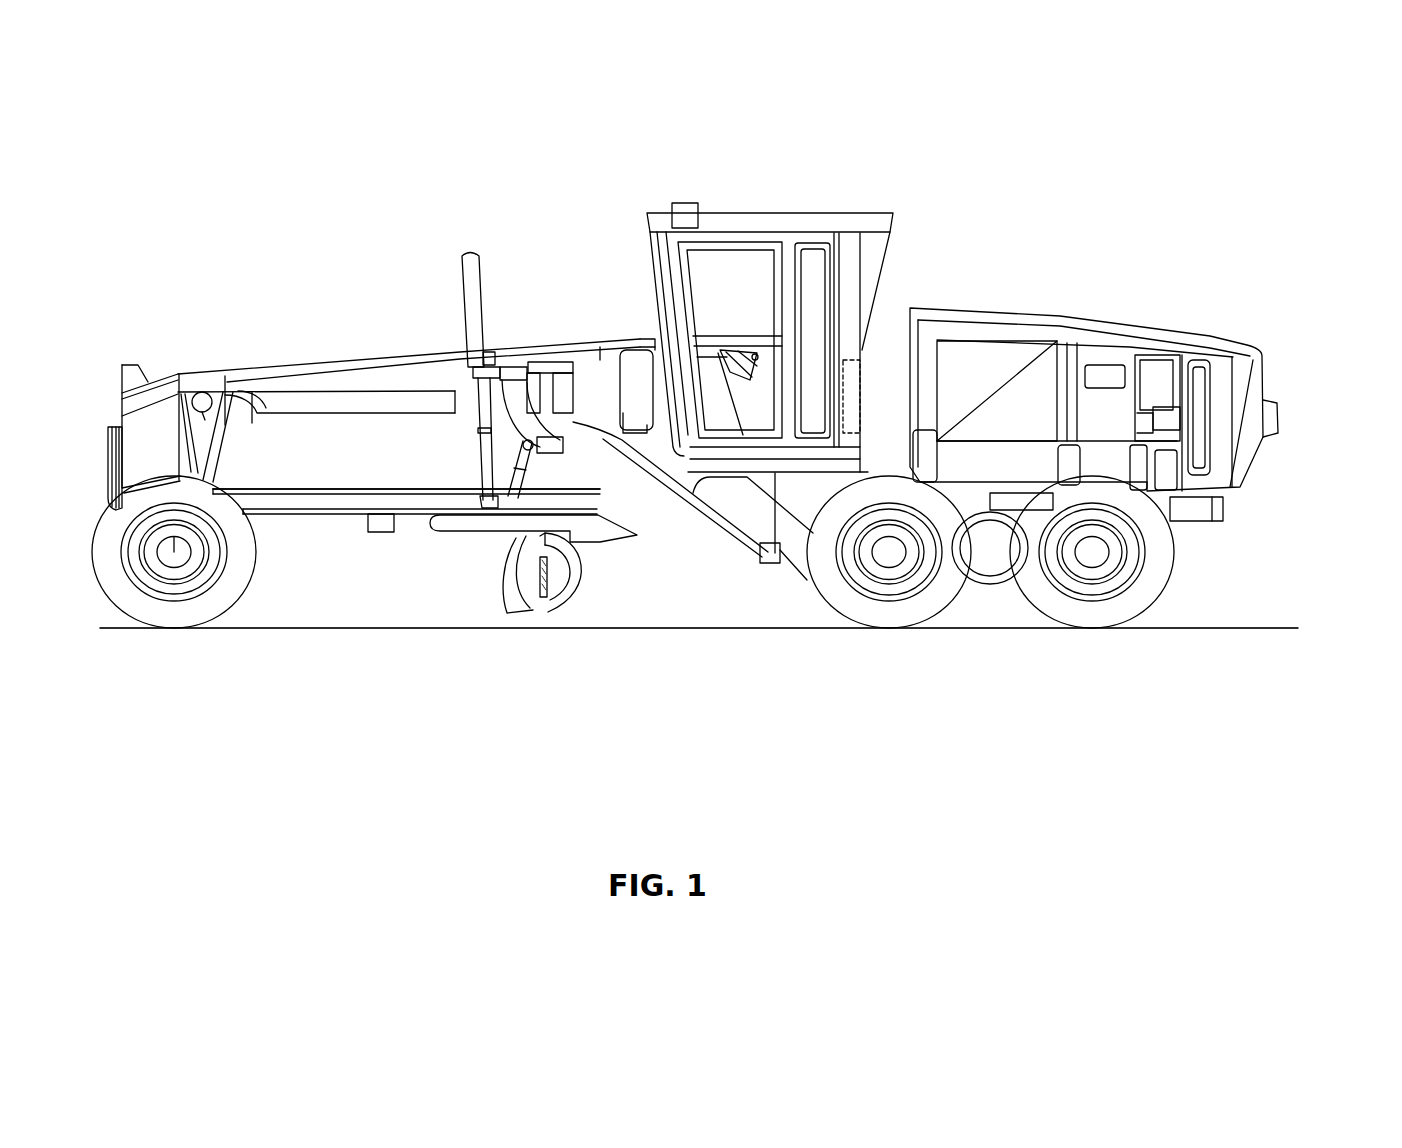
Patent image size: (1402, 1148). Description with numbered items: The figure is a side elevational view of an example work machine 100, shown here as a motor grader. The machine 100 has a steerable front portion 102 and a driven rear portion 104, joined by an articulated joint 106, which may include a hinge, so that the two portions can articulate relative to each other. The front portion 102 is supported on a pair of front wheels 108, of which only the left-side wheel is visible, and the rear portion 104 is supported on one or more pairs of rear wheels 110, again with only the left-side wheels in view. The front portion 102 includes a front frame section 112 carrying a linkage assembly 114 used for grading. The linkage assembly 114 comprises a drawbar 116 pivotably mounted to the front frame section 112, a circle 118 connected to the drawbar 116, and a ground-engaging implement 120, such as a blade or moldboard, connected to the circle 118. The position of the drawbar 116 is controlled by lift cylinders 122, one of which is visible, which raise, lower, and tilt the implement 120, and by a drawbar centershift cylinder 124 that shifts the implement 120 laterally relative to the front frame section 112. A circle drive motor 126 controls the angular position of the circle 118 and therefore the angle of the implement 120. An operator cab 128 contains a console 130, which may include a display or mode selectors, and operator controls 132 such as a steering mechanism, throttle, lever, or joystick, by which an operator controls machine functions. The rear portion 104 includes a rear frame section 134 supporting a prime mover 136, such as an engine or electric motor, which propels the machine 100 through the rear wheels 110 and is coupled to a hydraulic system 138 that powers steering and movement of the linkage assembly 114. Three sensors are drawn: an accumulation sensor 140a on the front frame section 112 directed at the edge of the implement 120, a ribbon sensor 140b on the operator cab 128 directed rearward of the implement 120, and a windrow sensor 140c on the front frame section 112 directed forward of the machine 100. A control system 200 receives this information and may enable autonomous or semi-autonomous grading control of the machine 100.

The machine 100 is at (303, 134).
The front portion 102 is at (237, 312).
The rear portion 104 is at (1272, 458).
The articulated joint 106 is at (803, 568).
The front wheels 108 is at (218, 595).
The rear wheels 110 is at (943, 597).
The front frame section 112 is at (288, 380).
The linkage assembly 114 is at (460, 473).
The drawbar 116 is at (270, 498).
The circle 118 is at (405, 522).
The ground-engaging implement 120 is at (575, 570).
The lift cylinders 122 is at (475, 326).
The drawbar centershift cylinder 124 is at (527, 457).
The circle drive motor 126 is at (380, 532).
The operator cab 128 is at (803, 228).
The console 130 is at (710, 387).
The operator controls 132 is at (747, 347).
The rear frame section 134 is at (1185, 507).
The prime mover 136 is at (1013, 363).
The hydraulic system 138 is at (1113, 352).
The accumulation sensor 140a is at (206, 414).
The ribbon sensor 140b is at (683, 208).
The windrow sensor 140c is at (128, 370).
The control system 200 is at (852, 392).